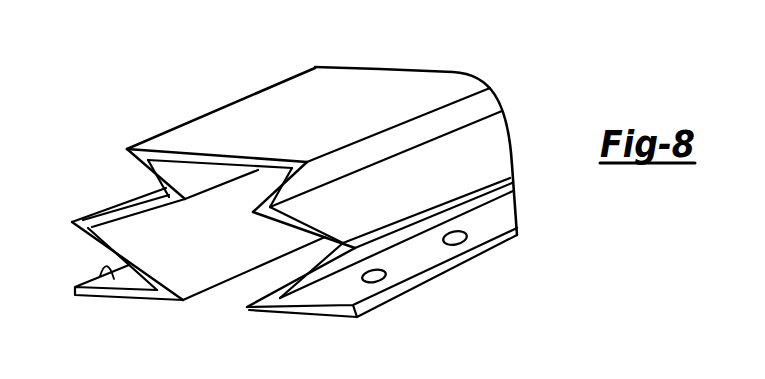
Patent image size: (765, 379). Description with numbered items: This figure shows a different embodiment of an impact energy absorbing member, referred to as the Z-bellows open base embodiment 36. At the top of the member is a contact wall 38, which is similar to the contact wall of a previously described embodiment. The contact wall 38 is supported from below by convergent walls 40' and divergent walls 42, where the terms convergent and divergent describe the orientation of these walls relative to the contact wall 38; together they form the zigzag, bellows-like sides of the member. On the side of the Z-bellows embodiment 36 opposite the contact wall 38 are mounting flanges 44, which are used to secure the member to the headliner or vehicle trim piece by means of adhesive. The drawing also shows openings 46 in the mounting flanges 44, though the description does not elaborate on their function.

The Z-bellows open base embodiment 36 is at (232, 101).
The contact wall 38 is at (314, 86).
The convergent wall 40' is at (319, 136).
The divergent wall 42 is at (140, 198).
The mounting flange 44 is at (74, 288).
The hole 46 is at (388, 268).